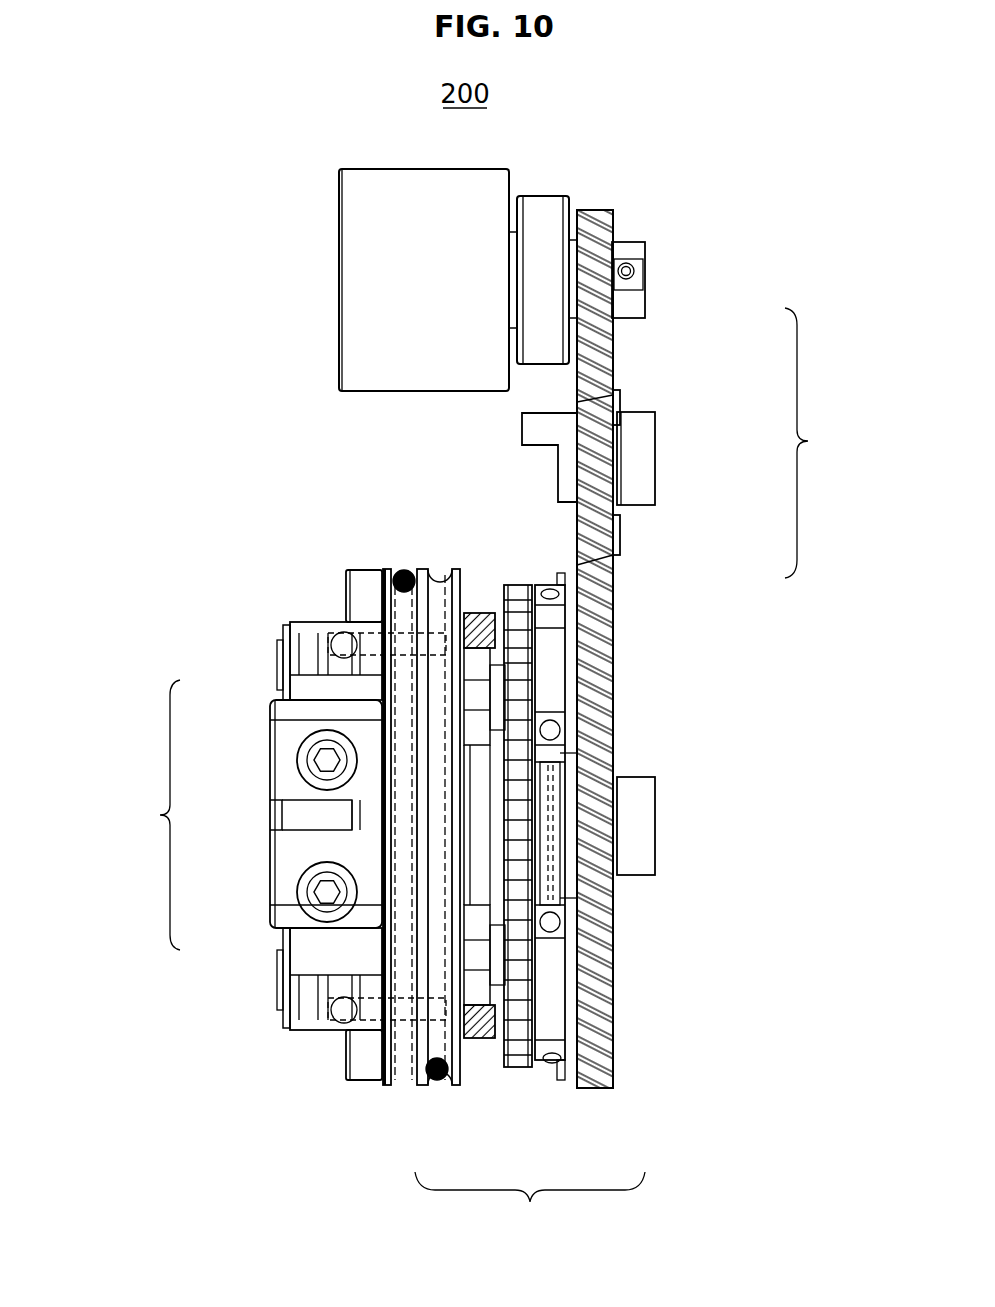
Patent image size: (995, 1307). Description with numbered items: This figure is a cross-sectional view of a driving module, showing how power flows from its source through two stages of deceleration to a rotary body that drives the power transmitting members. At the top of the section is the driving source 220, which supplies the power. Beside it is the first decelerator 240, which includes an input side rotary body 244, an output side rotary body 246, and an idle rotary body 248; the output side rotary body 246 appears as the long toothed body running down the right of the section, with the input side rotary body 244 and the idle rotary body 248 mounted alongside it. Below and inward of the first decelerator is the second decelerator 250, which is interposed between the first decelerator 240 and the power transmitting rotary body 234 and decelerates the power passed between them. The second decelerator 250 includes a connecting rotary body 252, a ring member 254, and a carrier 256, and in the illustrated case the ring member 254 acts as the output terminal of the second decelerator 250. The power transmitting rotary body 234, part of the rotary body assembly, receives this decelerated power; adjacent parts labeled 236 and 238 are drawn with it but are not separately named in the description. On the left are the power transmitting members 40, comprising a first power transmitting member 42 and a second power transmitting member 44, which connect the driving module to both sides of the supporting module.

The driving source 220 is at (352, 258).
The first decelerator 240 is at (737, 443).
The input side rotary body 244 is at (637, 275).
The output side rotary body 246 is at (613, 605).
The idle rotary body 248 is at (607, 455).
The second decelerator 250 is at (530, 1209).
The connecting rotary body 252 is at (518, 1058).
The ring member 254 is at (482, 1033).
The carrier 256 is at (552, 1050).
The power transmitting rotary body 234 is at (420, 568).
The pulley flange 236 is at (457, 568).
The support plate 238 is at (385, 1086).
The power transmitting members 40 is at (256, 825).
The first power transmitting member 42 is at (403, 588).
The second power transmitting member 44 is at (437, 1068).